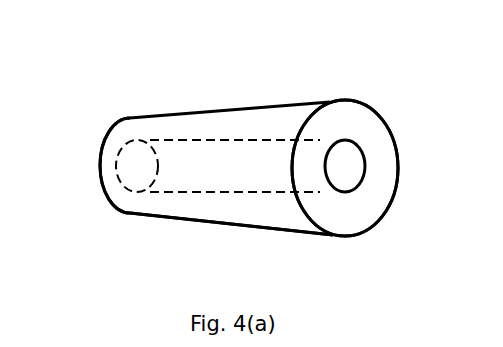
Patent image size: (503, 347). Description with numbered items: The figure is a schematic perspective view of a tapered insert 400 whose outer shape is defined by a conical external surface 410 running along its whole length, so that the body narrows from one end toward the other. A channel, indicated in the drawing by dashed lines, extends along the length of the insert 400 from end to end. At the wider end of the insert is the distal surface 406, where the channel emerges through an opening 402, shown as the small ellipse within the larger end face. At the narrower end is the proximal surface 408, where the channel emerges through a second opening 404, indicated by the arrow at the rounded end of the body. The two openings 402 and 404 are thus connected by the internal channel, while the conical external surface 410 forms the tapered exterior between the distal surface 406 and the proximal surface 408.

The insert 400 is at (245, 65).
The opening 402 is at (343, 163).
The opening 404 is at (88, 167).
The distal surface 406 is at (357, 118).
The proximal surface 408 is at (100, 187).
The conical external surface 410 is at (220, 213).